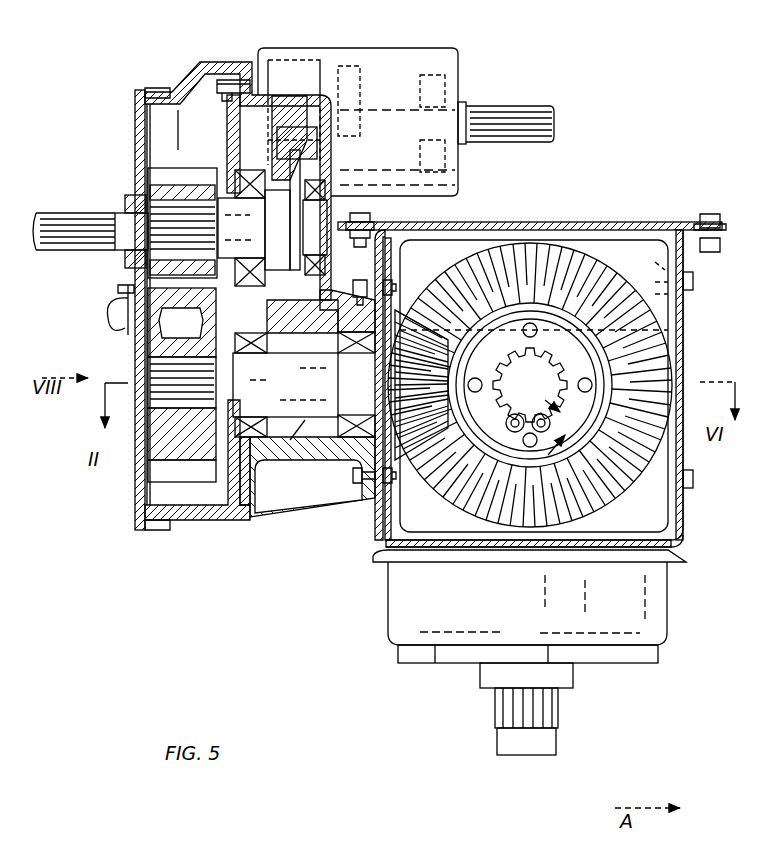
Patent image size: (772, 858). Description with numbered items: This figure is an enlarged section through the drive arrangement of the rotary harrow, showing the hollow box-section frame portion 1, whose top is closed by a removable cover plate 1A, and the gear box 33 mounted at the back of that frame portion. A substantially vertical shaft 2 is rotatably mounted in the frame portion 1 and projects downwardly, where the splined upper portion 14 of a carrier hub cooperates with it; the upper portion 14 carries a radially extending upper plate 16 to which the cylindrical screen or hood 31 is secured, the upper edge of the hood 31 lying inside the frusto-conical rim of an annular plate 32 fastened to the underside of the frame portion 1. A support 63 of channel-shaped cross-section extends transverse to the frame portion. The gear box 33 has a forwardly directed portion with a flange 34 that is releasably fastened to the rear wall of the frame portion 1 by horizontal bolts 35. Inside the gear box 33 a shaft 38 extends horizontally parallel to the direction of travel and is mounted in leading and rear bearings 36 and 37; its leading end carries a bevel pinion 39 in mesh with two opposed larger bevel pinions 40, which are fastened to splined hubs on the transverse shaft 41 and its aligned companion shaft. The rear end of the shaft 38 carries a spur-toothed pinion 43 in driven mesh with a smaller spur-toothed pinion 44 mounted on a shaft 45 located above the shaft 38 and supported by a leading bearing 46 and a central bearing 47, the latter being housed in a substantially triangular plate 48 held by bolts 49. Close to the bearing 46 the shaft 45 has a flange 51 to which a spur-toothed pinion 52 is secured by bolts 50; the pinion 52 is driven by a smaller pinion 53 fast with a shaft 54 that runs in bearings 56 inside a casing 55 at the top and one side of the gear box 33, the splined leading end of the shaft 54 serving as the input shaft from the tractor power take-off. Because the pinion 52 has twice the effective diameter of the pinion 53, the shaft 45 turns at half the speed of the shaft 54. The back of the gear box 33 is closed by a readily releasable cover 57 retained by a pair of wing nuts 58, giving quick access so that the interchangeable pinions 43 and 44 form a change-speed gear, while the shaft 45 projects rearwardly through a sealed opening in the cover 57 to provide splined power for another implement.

The hollow box-section frame portion 1 is at (680, 365).
The removable cover plate 1A is at (648, 230).
The shaft 2 is at (522, 756).
The upper portion of hub 14 is at (572, 684).
The upper plate 16 is at (428, 655).
The cylindrical screen or hood 31 is at (388, 628).
The annular plate 32 is at (378, 563).
The gear box 33 is at (232, 522).
The flange 34 is at (378, 500).
The bolts 35 is at (372, 280).
The leading roller or ball bearing 36 is at (346, 343).
The rear roller or ball bearing 37 is at (252, 420).
The shaft 38 is at (283, 447).
The bevel pinion 39 is at (460, 410).
The bevel pinions 40 is at (560, 243).
The shaft 41 is at (552, 427).
The straight-toothed or spur-toothed pinion 43 is at (205, 495).
The straight-toothed or spur-toothed pinion 44 is at (150, 178).
The shaft 45 is at (88, 214).
The leading ball or roller bearing 46 is at (362, 222).
The central ball or roller bearing 47 is at (240, 186).
The substantially triangular plate 48 is at (227, 143).
The bolts 49 is at (176, 122).
The bolts 50 is at (272, 175).
The flange 51 is at (302, 180).
The straight-toothed or spur-toothed pinion 52 is at (290, 92).
The straight-toothed or spur-toothed pinion 53 is at (302, 112).
The shaft 54 is at (557, 126).
The casing 55 is at (398, 52).
The ball or roller bearings 56 is at (428, 74).
The cover 57 is at (138, 96).
The wing nuts 58 is at (110, 330).
The support 63 is at (430, 260).